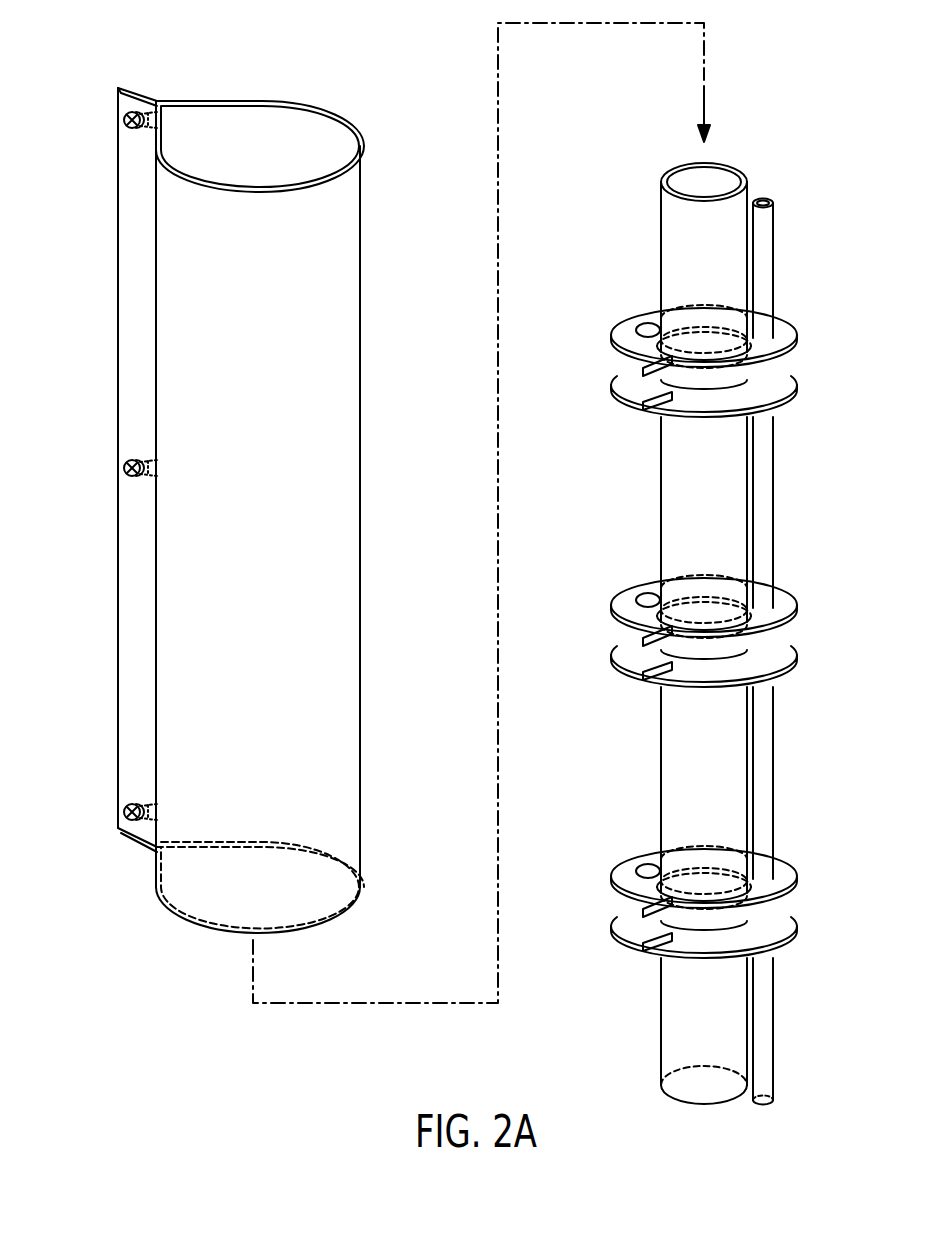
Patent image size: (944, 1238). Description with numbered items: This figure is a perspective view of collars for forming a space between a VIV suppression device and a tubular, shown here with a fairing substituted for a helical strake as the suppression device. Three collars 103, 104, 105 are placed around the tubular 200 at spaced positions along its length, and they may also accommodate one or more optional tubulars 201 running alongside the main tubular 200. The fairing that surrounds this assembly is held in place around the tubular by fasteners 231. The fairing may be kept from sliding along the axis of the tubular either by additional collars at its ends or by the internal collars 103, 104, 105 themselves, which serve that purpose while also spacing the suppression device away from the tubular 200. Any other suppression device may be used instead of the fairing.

The tubular 200 is at (676, 217).
The optional tubular 201 is at (765, 218).
The collar 103 is at (805, 318).
The collar 104 is at (744, 628).
The collar 105 is at (743, 899).
The fastener 231 is at (122, 123).